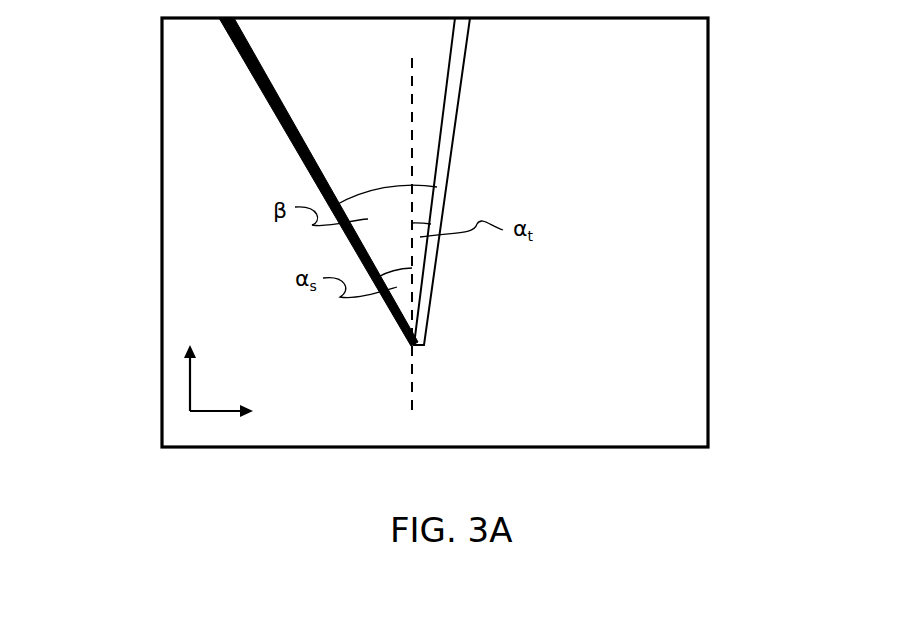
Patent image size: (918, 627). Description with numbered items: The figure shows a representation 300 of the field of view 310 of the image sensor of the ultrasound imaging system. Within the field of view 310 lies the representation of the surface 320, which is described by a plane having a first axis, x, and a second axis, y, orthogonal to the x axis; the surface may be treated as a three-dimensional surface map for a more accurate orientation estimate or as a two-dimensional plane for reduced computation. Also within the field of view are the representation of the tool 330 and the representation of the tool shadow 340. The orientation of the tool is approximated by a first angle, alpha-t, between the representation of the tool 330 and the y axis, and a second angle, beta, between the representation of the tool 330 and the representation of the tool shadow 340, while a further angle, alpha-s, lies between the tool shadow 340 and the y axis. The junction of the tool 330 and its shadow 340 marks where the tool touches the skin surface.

The representation 300 is at (136, 511).
The field of view 310 is at (710, 78).
The representation of the surface 320 is at (686, 164).
The representation of the tool 330 is at (457, 113).
The representation of the tool shadow 340 is at (263, 95).